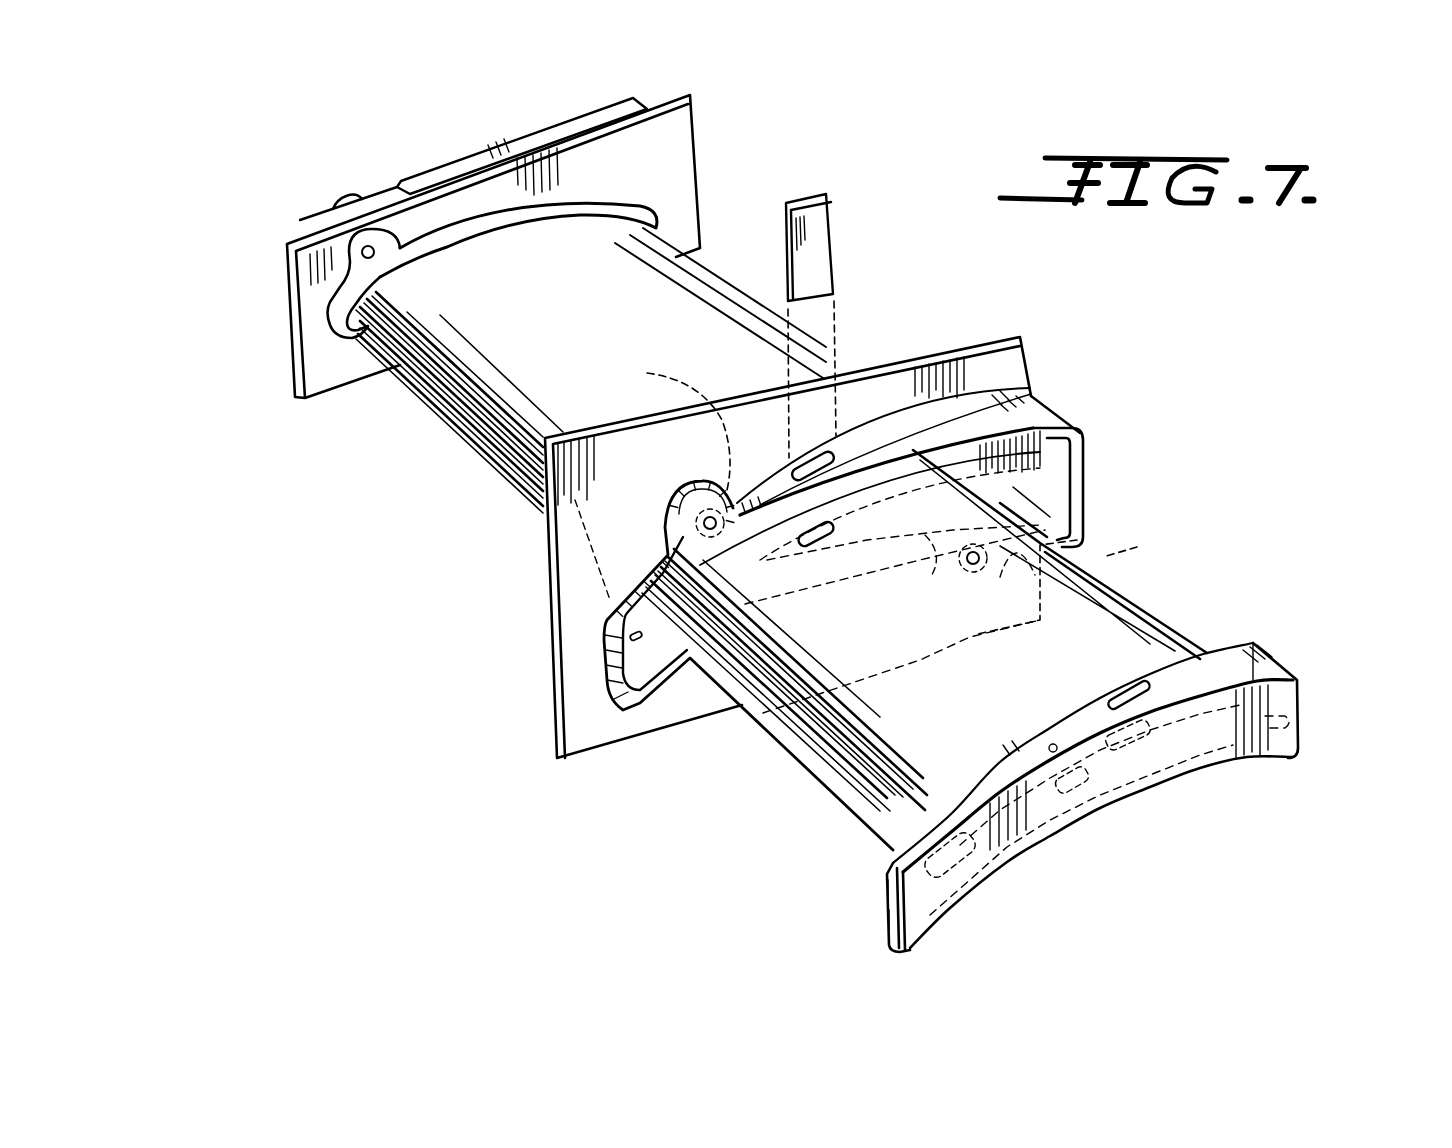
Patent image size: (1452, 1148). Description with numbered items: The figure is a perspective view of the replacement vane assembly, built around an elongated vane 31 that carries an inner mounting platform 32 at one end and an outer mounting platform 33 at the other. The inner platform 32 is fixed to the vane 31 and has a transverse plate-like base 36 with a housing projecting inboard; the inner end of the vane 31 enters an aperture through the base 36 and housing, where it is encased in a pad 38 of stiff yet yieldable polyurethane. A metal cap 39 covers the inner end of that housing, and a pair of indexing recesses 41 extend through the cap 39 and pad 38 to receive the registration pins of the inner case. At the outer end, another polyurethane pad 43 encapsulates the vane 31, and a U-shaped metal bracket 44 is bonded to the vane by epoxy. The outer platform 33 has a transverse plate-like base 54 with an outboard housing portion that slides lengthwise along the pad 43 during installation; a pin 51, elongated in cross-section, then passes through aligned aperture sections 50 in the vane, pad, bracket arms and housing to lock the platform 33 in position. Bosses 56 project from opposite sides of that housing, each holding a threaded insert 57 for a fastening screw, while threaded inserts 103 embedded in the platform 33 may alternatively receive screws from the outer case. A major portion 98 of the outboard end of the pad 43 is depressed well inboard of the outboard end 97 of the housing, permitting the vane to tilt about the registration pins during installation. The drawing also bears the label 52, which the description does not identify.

The elongated vane 31 is at (607, 332).
The inner mounting platform 32 is at (287, 293).
The outer mounting platform 33 is at (1004, 366).
The transverse plate-like base 36 is at (675, 172).
The pad 38 is at (485, 220).
The metal cap 39 is at (340, 202).
The indexing recesses 41 is at (368, 246).
The pad 43 is at (1164, 791).
The U-shaped metal bracket 44 is at (1133, 750).
The aperture sections 50 is at (807, 453).
The pin 51 is at (815, 258).
The intermediate plate 52 is at (545, 571).
The transverse plate-like base 54 is at (1052, 405).
The bosses 56 is at (688, 482).
The threaded insert 57 is at (700, 525).
The outboard end of housing 97 is at (1045, 447).
The major portion of pad outboard end 98 is at (1293, 700).
The threaded inserts 103 is at (896, 493).